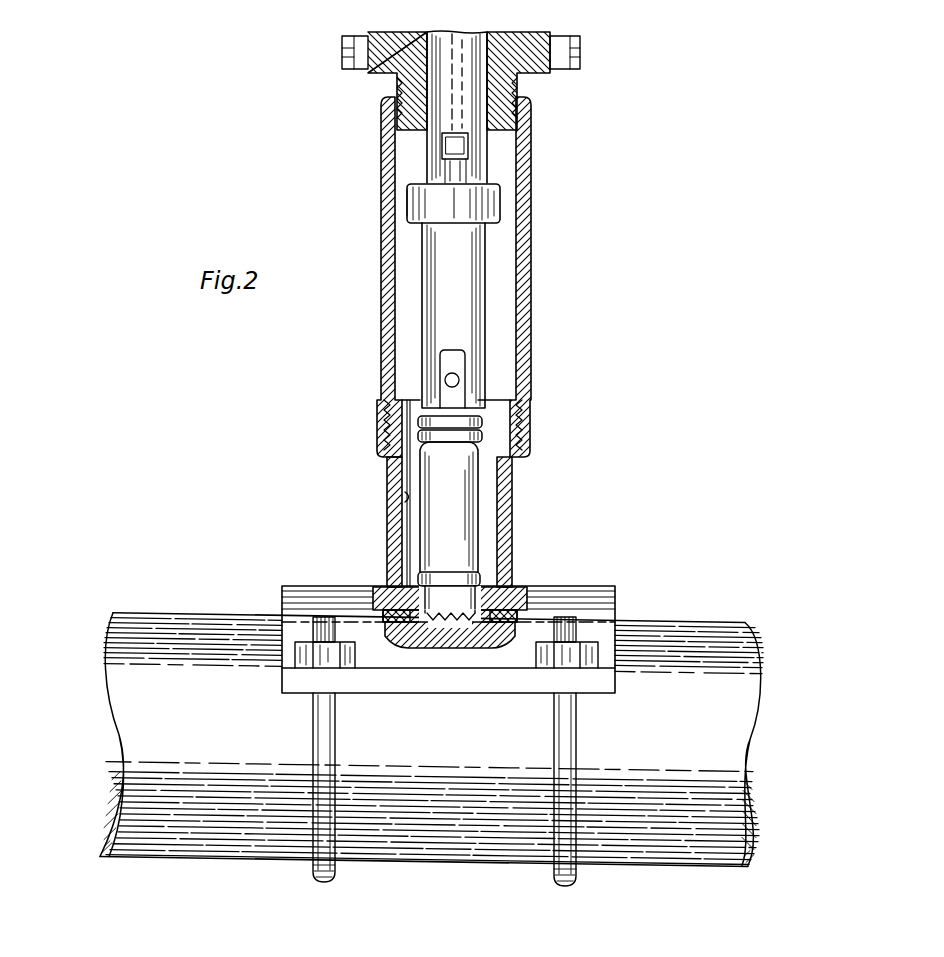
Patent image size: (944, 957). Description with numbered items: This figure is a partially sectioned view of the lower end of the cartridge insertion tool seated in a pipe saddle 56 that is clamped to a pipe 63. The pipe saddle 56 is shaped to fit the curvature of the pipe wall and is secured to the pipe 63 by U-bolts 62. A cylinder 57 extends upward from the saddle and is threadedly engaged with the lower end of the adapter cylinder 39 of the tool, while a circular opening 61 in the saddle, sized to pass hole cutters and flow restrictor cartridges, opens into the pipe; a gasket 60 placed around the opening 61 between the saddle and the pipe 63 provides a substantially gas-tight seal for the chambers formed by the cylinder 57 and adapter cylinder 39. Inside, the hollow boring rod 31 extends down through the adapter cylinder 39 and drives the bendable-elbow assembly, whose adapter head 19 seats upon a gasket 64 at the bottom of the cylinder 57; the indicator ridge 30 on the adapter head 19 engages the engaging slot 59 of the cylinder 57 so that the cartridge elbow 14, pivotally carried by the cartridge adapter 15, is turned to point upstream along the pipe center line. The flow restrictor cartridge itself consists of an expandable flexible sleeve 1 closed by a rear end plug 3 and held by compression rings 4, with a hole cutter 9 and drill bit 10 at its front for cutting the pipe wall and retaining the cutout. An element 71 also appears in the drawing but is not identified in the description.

The expandable flexible sleeve 1 is at (453, 516).
The rear end plug 3 is at (488, 419).
The compression rings 4 is at (420, 436).
The hole cutter 9 is at (468, 612).
The drill bit 10 is at (449, 621).
The cartridge elbow 14 is at (437, 388).
The cartridge adapter 15 is at (422, 310).
The adapter head 19 is at (500, 205).
The indicator ridge 30 is at (407, 204).
The hollow boring rod 31 is at (484, 118).
The adapter cylinder 39 is at (531, 290).
The pipe saddle 56 is at (600, 592).
The cylinder 57 is at (512, 476).
The engaging slot 59 is at (405, 497).
The gasket 60 is at (506, 610).
The circular opening 61 is at (387, 592).
The U-bolts 62 is at (316, 722).
The pipe 63 is at (130, 708).
The gasket 64 is at (493, 600).
The passage 71 is at (450, 92).